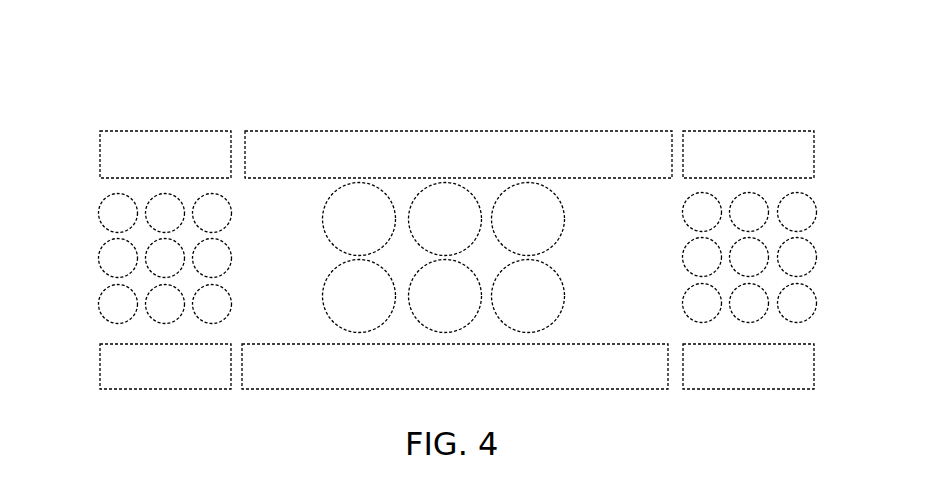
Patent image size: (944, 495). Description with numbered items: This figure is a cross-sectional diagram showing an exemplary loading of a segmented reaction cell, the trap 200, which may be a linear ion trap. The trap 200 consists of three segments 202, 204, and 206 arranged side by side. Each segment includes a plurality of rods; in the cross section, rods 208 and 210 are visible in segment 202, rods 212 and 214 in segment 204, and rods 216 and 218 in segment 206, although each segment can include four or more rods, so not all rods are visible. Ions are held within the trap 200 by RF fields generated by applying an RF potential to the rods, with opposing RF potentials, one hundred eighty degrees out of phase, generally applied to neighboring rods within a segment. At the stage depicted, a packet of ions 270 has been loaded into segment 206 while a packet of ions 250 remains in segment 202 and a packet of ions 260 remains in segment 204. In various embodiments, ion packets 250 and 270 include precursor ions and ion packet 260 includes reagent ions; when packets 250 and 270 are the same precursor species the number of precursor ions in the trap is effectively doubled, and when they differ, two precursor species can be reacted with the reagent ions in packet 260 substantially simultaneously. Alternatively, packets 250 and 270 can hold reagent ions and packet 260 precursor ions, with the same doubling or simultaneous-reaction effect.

The reaction cell ion trap 200 is at (677, 80).
The first segment 202 is at (230, 118).
The second segment 204 is at (672, 118).
The third segment 206 is at (813, 122).
The rod 208 is at (165, 154).
The rod 210 is at (165, 366).
The rod 212 is at (458, 154).
The rod 214 is at (455, 366).
The rod 216 is at (748, 154).
The rod 218 is at (748, 366).
The packet of ions 250 is at (101, 278).
The packet of ions 260 is at (336, 258).
The packet of ions 270 is at (683, 278).